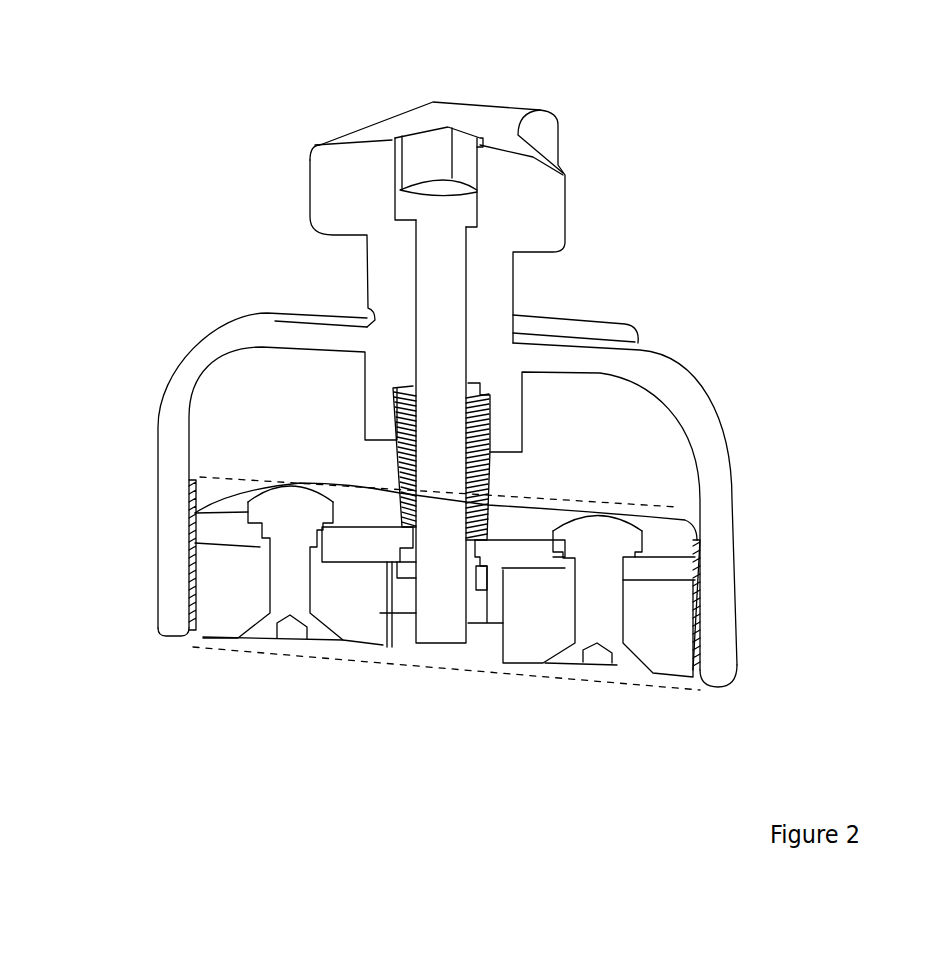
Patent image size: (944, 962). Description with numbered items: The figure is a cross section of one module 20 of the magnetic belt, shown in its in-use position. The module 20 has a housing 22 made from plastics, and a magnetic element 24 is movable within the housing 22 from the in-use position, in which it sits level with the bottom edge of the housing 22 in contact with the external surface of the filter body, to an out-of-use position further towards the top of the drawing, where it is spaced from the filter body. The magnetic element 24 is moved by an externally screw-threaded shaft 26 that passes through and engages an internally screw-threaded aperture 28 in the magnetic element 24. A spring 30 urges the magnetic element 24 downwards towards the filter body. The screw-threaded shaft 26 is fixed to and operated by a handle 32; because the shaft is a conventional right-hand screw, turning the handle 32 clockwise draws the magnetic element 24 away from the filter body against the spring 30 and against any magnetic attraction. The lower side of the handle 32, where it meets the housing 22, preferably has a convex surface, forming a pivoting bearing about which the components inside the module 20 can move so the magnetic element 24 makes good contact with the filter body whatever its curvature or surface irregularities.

The module 20 is at (408, 690).
The housing 22 is at (157, 542).
The magnetic element 24 is at (240, 653).
The screw-threaded shaft 26 is at (450, 290).
The screw-threaded aperture 28 is at (478, 582).
The spring 30 is at (397, 463).
The handle 32 is at (310, 183).